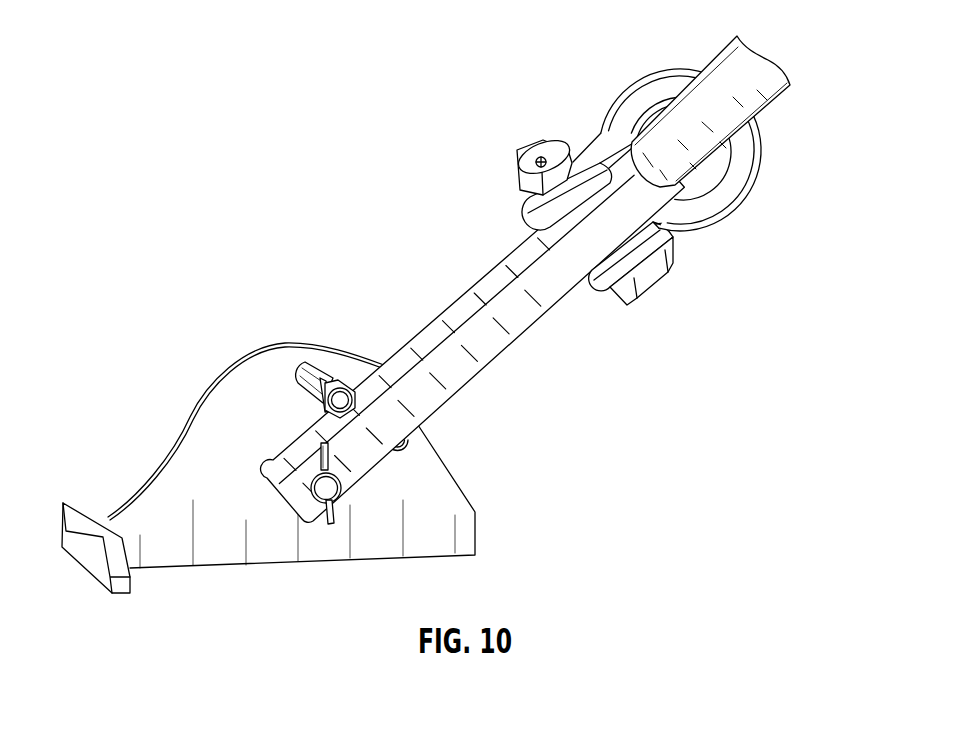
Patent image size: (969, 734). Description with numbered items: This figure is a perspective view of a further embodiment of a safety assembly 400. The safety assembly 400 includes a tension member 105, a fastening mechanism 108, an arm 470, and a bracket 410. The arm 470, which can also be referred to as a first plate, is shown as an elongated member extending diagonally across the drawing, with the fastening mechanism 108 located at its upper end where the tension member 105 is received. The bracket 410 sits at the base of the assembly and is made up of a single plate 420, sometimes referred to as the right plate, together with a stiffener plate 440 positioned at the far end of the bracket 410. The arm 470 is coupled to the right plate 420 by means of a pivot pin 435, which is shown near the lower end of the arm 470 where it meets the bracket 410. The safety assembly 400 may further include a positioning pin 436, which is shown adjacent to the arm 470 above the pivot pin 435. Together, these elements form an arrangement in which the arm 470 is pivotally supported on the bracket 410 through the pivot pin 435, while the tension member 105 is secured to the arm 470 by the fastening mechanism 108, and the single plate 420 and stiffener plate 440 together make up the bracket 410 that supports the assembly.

The safety assembly 400 is at (203, 174).
The tension member 105 is at (760, 92).
The fastening mechanism 108 is at (656, 97).
The bracket 410 is at (496, 531).
The single plate 420 is at (262, 383).
The pivot pin 435 is at (323, 498).
The positioning pin 436 is at (318, 374).
The stiffener plate 440 is at (75, 538).
The arm 470 is at (616, 331).